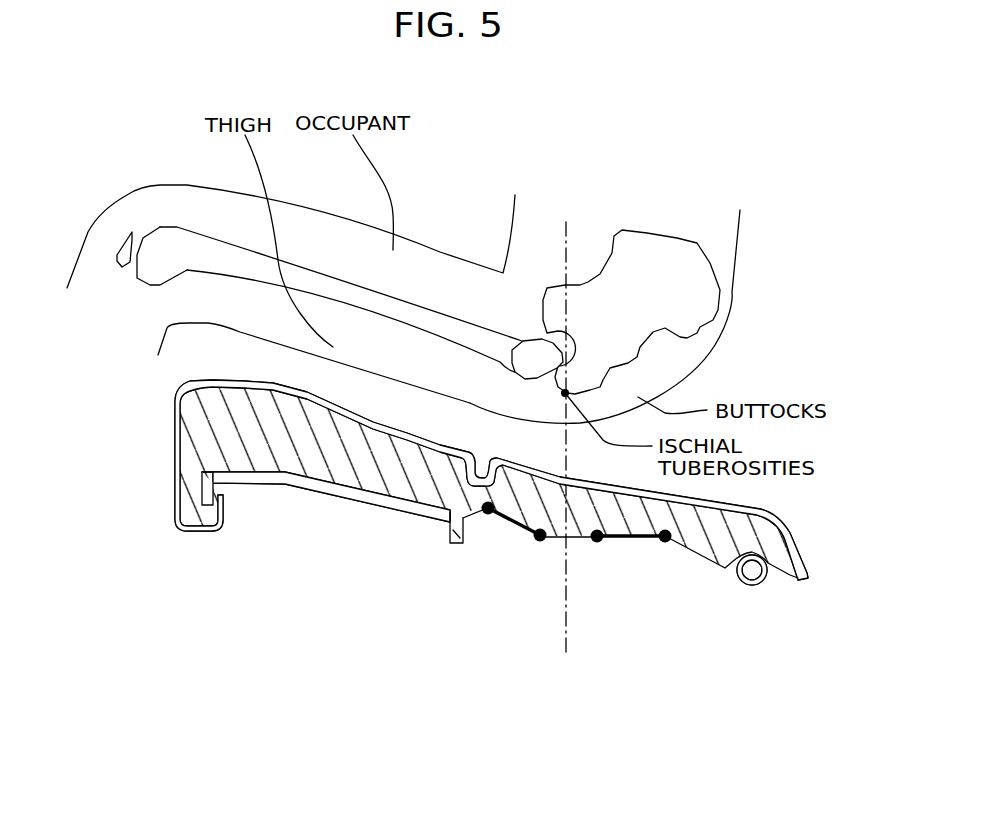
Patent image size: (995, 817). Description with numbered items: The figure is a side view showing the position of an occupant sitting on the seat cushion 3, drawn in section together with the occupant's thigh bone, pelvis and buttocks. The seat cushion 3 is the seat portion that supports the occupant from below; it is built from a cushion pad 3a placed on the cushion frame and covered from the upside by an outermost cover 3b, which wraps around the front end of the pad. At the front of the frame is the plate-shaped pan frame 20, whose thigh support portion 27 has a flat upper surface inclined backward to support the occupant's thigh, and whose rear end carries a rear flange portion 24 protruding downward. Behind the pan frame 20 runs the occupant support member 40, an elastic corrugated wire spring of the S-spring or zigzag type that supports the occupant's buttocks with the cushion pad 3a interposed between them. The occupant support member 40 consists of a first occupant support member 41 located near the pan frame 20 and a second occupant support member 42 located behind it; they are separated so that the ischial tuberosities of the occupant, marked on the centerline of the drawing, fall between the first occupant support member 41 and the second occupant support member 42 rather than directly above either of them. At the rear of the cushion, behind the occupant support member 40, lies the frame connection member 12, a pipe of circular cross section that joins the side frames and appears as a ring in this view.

The seat cushion 3 is at (437, 519).
The cushion pad 3a is at (220, 427).
The outermost cover 3b is at (212, 382).
The frame connection member 12 is at (765, 578).
The pan frame 20 is at (202, 478).
The rear flange portion 24 is at (468, 541).
The thigh support portion 27 is at (318, 494).
The occupant support member 40 is at (577, 617).
The first occupant support member 41 is at (515, 528).
The second occupant support member 42 is at (628, 543).